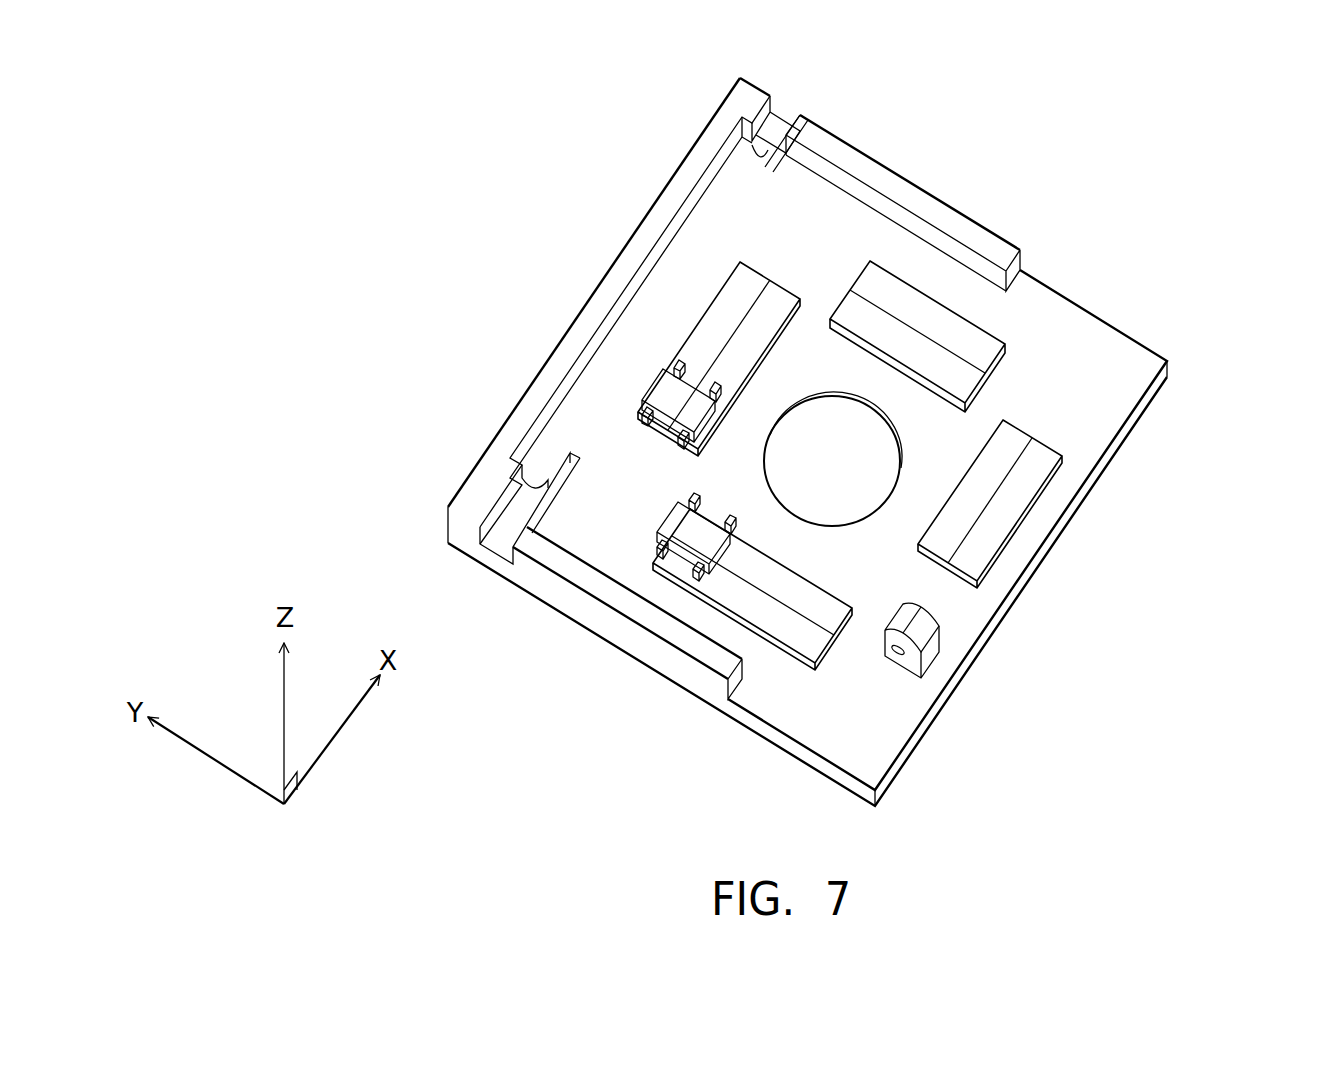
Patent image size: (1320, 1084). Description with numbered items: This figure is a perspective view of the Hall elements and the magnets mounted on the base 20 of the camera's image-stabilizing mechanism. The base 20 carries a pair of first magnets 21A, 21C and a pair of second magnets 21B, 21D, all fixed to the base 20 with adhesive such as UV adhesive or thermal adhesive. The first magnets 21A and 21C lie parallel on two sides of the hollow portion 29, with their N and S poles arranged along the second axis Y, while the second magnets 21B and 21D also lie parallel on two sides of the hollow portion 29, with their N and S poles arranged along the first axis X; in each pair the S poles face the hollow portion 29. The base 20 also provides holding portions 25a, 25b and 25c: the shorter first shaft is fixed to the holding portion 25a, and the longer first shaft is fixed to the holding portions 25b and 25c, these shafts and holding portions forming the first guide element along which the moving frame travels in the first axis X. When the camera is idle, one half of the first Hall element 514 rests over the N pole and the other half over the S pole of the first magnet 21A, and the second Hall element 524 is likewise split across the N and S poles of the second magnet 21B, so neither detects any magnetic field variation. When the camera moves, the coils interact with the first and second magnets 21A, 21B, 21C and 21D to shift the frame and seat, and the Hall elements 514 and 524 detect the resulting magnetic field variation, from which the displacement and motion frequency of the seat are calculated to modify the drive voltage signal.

The base 20 is at (1150, 343).
The first magnet 21A is at (789, 657).
The second magnet 21B is at (782, 270).
The first magnet 21C is at (947, 303).
The second magnet 21D is at (1020, 528).
The holding portion 25a is at (935, 672).
The holding portion 25b is at (527, 450).
The holding portion 25c is at (748, 132).
The hollow portion 29 is at (828, 452).
The first Hall element 514 is at (683, 532).
The second Hall element 524 is at (675, 408).